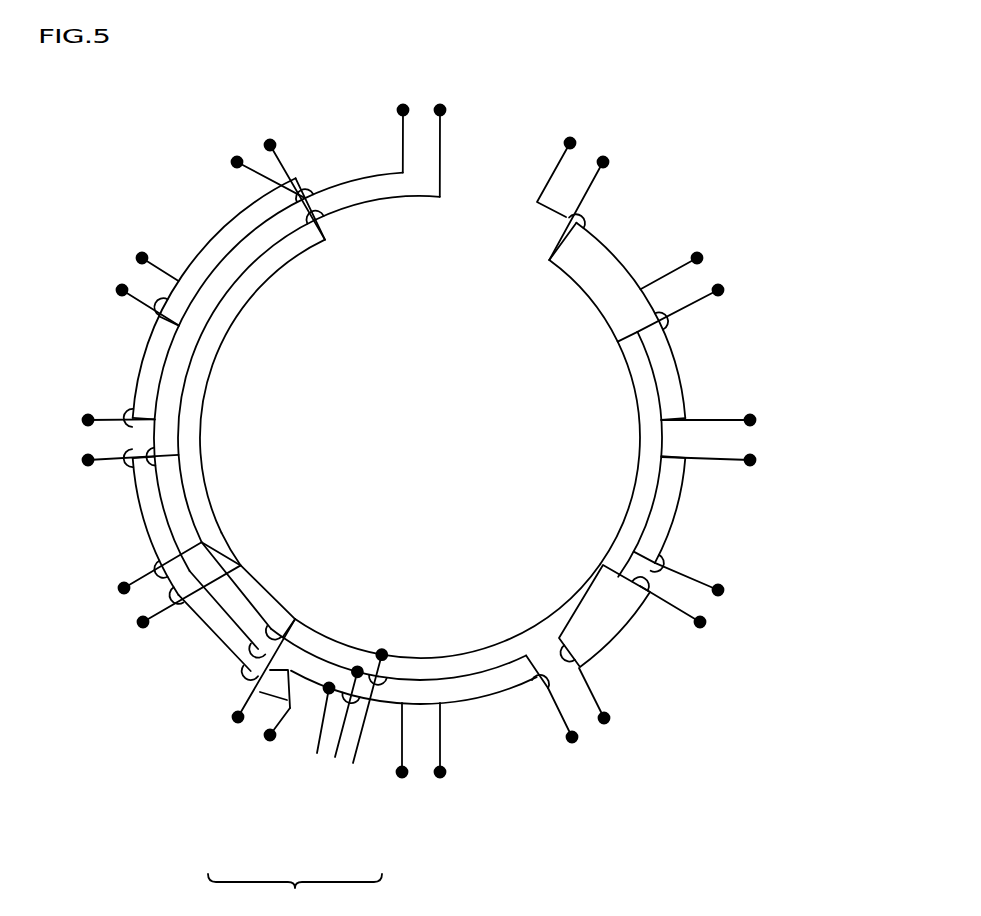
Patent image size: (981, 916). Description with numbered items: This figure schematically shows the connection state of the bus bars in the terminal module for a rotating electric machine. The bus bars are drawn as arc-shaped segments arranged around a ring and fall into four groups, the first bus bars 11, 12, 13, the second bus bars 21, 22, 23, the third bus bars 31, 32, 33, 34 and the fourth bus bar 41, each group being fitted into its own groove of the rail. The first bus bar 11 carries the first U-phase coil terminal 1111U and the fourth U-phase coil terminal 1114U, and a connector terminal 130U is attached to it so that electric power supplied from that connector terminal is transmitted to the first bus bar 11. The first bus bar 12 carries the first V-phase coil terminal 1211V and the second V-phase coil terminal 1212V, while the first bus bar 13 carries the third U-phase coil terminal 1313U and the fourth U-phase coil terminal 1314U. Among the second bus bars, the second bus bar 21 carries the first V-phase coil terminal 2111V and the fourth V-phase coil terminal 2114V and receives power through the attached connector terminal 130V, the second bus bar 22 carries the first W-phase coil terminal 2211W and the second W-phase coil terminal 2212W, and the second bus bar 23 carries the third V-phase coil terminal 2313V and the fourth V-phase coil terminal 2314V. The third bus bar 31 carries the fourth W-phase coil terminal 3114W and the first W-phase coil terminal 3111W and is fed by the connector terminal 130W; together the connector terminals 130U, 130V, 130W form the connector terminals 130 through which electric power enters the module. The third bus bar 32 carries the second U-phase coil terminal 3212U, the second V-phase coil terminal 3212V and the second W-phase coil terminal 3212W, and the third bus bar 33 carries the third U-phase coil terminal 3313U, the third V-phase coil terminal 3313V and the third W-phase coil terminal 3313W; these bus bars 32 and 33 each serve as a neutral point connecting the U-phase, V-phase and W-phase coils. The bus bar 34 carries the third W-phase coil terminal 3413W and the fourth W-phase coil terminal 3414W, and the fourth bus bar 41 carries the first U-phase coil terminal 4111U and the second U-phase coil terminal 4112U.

The first bus bar 11 is at (420, 656).
The first bus bar 12 is at (201, 438).
The first bus bar 13 is at (638, 396).
The second bus bar 21 is at (252, 612).
The second bus bar 22 is at (213, 316).
The second bus bar 23 is at (660, 441).
The third bus bar 31 is at (325, 643).
The third bus bar 32 is at (357, 178).
The third bus bar 33 is at (622, 260).
The third bus bar 34 is at (617, 626).
The fourth bus bar 41 is at (213, 645).
The connector terminals 130 is at (295, 889).
The connector terminal 130U is at (348, 763).
The connector terminal 130V is at (333, 748).
The connector terminal 130W is at (313, 745).
The second W-phase coil terminal 3212W is at (382, 127).
The second W-phase coil terminal 2212W is at (462, 139).
The second V-phase coil terminal 1212V is at (264, 178).
The second V-phase coil terminal 3212V is at (236, 169).
The second U-phase coil terminal 4112U is at (123, 258).
The second U-phase coil terminal 3212U is at (115, 295).
The first W-phase coil terminal 3111W is at (84, 421).
The first W-phase coil terminal 2211W is at (96, 461).
The first V-phase coil terminal 2111V is at (126, 575).
The first V-phase coil terminal 1211V is at (156, 602).
The first U-phase coil terminal 1111U is at (232, 680).
The first U-phase coil terminal 4111U is at (247, 734).
The fourth W-phase coil terminal 3114W is at (387, 753).
The fourth W-phase coil terminal 3414W is at (462, 753).
The fourth V-phase coil terminal 2114V is at (593, 728).
The fourth V-phase coil terminal 2314V is at (625, 705).
The fourth U-phase coil terminal 1114U is at (704, 615).
The fourth U-phase coil terminal 1314U is at (721, 587).
The third W-phase coil terminal 3413W is at (745, 461).
The third W-phase coil terminal 3313W is at (745, 421).
The third V-phase coil terminal 2313V is at (713, 299).
The third V-phase coil terminal 3313V is at (705, 261).
The third U-phase coil terminal 1313U is at (608, 201).
The third U-phase coil terminal 3313U is at (585, 167).